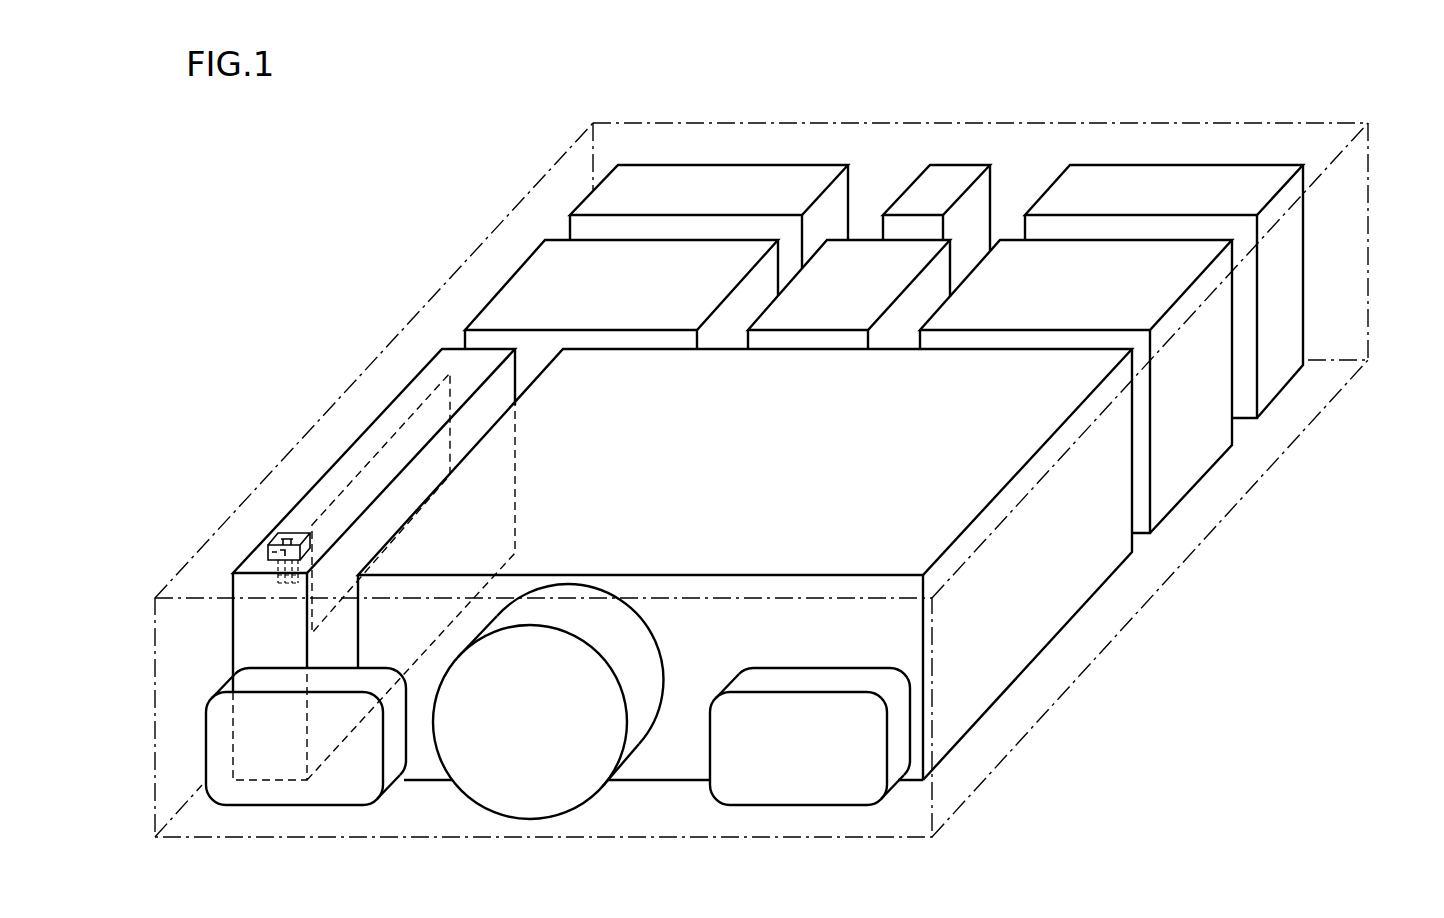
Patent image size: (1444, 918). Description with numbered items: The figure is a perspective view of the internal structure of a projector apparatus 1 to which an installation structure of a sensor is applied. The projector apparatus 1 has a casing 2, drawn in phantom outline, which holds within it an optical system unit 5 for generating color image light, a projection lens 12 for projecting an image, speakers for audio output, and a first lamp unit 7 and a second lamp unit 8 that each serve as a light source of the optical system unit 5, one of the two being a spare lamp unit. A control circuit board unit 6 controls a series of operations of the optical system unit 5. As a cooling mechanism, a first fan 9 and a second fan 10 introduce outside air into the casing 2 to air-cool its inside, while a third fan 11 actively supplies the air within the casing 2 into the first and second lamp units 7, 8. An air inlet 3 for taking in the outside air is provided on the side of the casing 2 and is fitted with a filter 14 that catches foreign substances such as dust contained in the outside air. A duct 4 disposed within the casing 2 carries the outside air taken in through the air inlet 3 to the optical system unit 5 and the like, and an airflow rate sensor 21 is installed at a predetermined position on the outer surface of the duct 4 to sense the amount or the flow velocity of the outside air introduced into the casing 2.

The projector apparatus 1 is at (1087, 95).
The casing 2 is at (1183, 122).
The air inlet 3 is at (370, 462).
The duct 4 is at (450, 360).
The optical system unit 5 is at (778, 564).
The control circuit board unit 6 is at (1025, 622).
The first lamp unit 7 is at (1188, 447).
The second lamp unit 8 is at (547, 280).
The first fan 9 is at (1280, 290).
The second fan 10 is at (627, 192).
The third fan 11 is at (943, 183).
The projection lens 12 is at (537, 770).
The filter 14 is at (343, 517).
The airflow rate sensor 21 is at (273, 533).